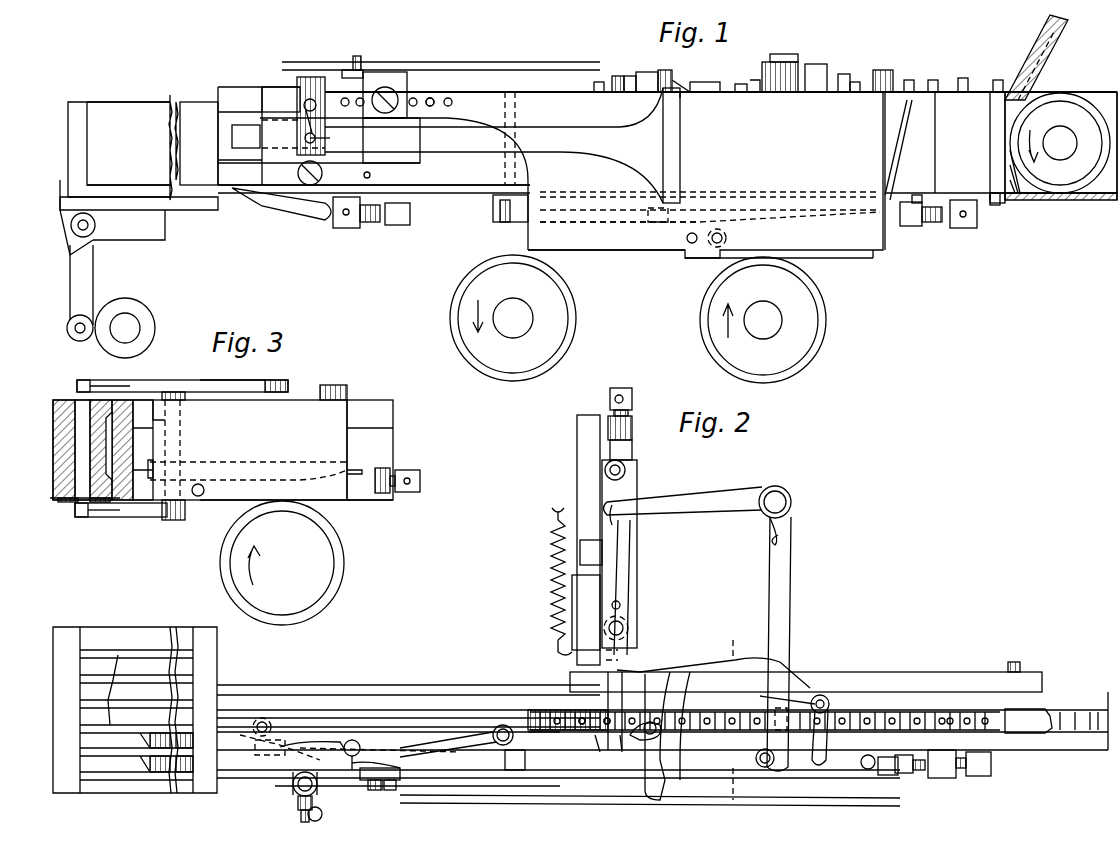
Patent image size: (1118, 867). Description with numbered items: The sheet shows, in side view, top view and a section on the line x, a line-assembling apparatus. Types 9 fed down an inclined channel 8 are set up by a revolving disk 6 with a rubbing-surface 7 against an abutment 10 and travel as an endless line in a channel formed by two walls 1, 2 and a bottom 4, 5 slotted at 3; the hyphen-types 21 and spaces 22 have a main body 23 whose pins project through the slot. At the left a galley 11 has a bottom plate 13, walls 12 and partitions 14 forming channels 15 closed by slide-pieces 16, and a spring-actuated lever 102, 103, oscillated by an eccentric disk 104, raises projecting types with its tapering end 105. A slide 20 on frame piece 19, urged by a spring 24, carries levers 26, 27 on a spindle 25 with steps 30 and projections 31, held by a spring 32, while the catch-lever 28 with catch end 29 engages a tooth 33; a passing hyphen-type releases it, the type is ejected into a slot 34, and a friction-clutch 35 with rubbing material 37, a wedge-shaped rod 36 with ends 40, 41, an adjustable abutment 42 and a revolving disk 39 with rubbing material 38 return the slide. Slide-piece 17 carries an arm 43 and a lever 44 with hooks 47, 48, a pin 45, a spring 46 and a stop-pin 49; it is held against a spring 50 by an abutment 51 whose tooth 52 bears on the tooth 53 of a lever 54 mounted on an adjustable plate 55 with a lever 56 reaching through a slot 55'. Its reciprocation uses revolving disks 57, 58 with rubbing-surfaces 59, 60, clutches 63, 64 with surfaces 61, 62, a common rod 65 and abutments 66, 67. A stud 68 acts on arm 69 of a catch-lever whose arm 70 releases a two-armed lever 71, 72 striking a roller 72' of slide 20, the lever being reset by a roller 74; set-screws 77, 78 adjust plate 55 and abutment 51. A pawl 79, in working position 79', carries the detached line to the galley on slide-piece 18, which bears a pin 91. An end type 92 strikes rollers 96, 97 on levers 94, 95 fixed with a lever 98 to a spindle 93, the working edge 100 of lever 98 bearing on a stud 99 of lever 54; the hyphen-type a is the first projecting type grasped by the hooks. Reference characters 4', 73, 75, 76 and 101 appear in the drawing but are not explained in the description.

In FIG. 1, the channel wall 1 is at (374, 136).
In FIG. 3, the channel wall 1 is at (55, 418).
In FIG. 2, the channel wall 1 is at (573, 749).
In FIG. 1, the channel wall 2 is at (1108, 100).
In FIG. 3, the channel wall 2 is at (85, 432).
In FIG. 2, the channel wall 2 is at (662, 721).
In FIG. 1, the slot 3 is at (1002, 202).
In FIG. 3, the slot 3 is at (105, 450).
In FIG. 2, the slot 3 is at (392, 716).
In FIG. 1, the channel bottom 4 is at (374, 196).
In FIG. 3, the channel bottom 4 is at (77, 491).
In FIG. 2, the base plate 4' is at (408, 734).
In FIG. 3, the channel bottom 5 is at (75, 500).
In FIG. 2, the channel bottom 5 is at (252, 710).
In FIG. 1, the revolving disk 6 is at (1060, 143).
In FIG. 1, the rubbing-surface 7 is at (1092, 184).
In FIG. 2, the rubbing-surface 7 is at (1068, 718).
In FIG. 1, the inclined channel 8 is at (1066, 44).
In FIG. 2, the inclined channel 8 is at (1035, 718).
In FIG. 1, the types 9 is at (1048, 66).
In FIG. 1, the abutment 10 is at (1030, 188).
In FIG. 1, the galley 11 is at (135, 104).
In FIG. 2, the galley 11 is at (174, 704).
In FIG. 1, the galley walls 12 is at (88, 130).
In FIG. 2, the galley walls 12 is at (80, 634).
In FIG. 1, the bottom plate 13 is at (104, 190).
In FIG. 2, the bottom plate 13 is at (118, 636).
In FIG. 1, the partitions 14 is at (129, 147).
In FIG. 2, the partitions 14 is at (105, 690).
In FIG. 2, the galley channels 15 is at (136, 691).
In FIG. 1, the movable slide-pieces 16 is at (196, 143).
In FIG. 2, the movable slide-pieces 16 is at (144, 707).
In FIG. 1, the slide-piece 17 is at (705, 175).
In FIG. 2, the slide-piece 17 is at (702, 768).
In FIG. 3, the slide-piece 18 is at (125, 492).
In FIG. 2, the slide-piece 18 is at (890, 672).
In FIG. 3, the framework piece 19 is at (165, 418).
In FIG. 2, the framework piece 19 is at (585, 466).
In FIG. 3, the spring-actuated slide 20 is at (200, 450).
In FIG. 2, the spring-actuated slide 20 is at (630, 488).
In FIG. 1, the hyphen-types 21 is at (726, 94).
In FIG. 2, the hyphen-types 21 is at (872, 716).
In FIG. 1, the spaces 22 is at (789, 148).
In FIG. 2, the spaces 22 is at (985, 716).
In FIG. 1, the main body 23 is at (990, 150).
In FIG. 2, the spring 24 is at (550, 568).
In FIG. 3, the spindle 25 is at (180, 436).
In FIG. 2, the spindle 25 is at (624, 628).
In FIG. 3, the ejecting lever 26 is at (120, 517).
In FIG. 1, the ejecting lever 27 is at (646, 66).
In FIG. 3, the ejecting lever 27 is at (156, 384).
In FIG. 2, the ejecting lever 27 is at (625, 664).
In FIG. 3, the catch-lever 28 is at (236, 386).
In FIG. 2, the catch-lever 28 is at (620, 560).
In FIG. 3, the catch end 29 is at (284, 384).
In FIG. 2, the catch end 29 is at (625, 522).
In FIG. 1, the step 30 is at (625, 67).
In FIG. 3, the step 30 is at (100, 385).
In FIG. 2, the step 30 is at (601, 730).
In FIG. 1, the projections 31 is at (615, 76).
In FIG. 3, the projections 31 is at (84, 384).
In FIG. 2, the projections 31 is at (574, 730).
In FIG. 2, the spring 32 is at (622, 606).
In FIG. 2, the tooth 33 is at (590, 552).
In FIG. 2, the slot 34 is at (603, 751).
In FIG. 3, the friction-clutch 35 is at (226, 502).
In FIG. 3, the wedge-shaped rod 36 is at (228, 468).
In FIG. 3, the rubbing material 37 is at (345, 500).
In FIG. 3, the rubbing material 38 is at (338, 548).
In FIG. 3, the revolving disk 39 is at (326, 574).
In FIG. 3, the rod end 40 is at (143, 450).
In FIG. 3, the rod end 41 is at (352, 466).
In FIG. 2, the rod end 41 is at (632, 450).
In FIG. 3, the adjustable abutment 42 is at (386, 481).
In FIG. 2, the adjustable abutment 42 is at (632, 428).
In FIG. 1, the projecting arm 43 is at (688, 109).
In FIG. 2, the projecting arm 43 is at (452, 782).
In FIG. 1, the lever 44 is at (440, 145).
In FIG. 2, the lever 44 is at (500, 790).
In FIG. 1, the pin 45 is at (329, 137).
In FIG. 2, the pin 45 is at (298, 812).
In FIG. 1, the spring 46 is at (298, 112).
In FIG. 2, the spring 46 is at (294, 794).
In FIG. 1, the hook-shaped end 47 is at (682, 94).
In FIG. 2, the hook-shaped end 47 is at (668, 745).
In FIG. 1, the hook-shaped end 48 is at (672, 203).
In FIG. 2, the stop-pin 49 is at (324, 811).
In FIG. 1, the spring 50 is at (898, 142).
In FIG. 1, the adjustable abutment 51 is at (405, 84).
In FIG. 2, the adjustable abutment 51 is at (383, 793).
In FIG. 1, the tooth 52 is at (400, 72).
In FIG. 2, the tooth 52 is at (364, 782).
In FIG. 1, the tooth 53 is at (350, 70).
In FIG. 2, the tooth 53 is at (361, 740).
In FIG. 1, the lever 54 is at (300, 80).
In FIG. 2, the lever 54 is at (314, 736).
In FIG. 1, the adjustable plate 55 is at (293, 164).
In FIG. 1, the slot 55' is at (246, 136).
In FIG. 2, the slot 55' is at (260, 759).
In FIG. 1, the lever 56 is at (262, 148).
In FIG. 2, the lever 56 is at (272, 730).
In FIG. 1, the revolving disk 57 is at (562, 330).
In FIG. 1, the revolving disk 58 is at (805, 340).
In FIG. 1, the rubbing-surface 59 is at (570, 298).
In FIG. 1, the rubbing-surface 60 is at (822, 307).
In FIG. 1, the rubbing-surface 61 is at (650, 255).
In FIG. 1, the rubbing-surface 62 is at (830, 258).
In FIG. 1, the wedge-shaped clutch 63 is at (568, 252).
In FIG. 1, the wedge-shaped clutch 64 is at (880, 262).
In FIG. 1, the common rod 65 is at (583, 222).
In FIG. 2, the common rod 65 is at (888, 746).
In FIG. 1, the adjustable abutment 66 is at (405, 222).
In FIG. 1, the adjustable abutment 67 is at (906, 226).
In FIG. 2, the adjustable abutment 67 is at (900, 774).
In FIG. 1, the stud 68 is at (880, 78).
In FIG. 2, the stud 68 is at (860, 772).
In FIG. 1, the lever arm 69 is at (840, 72).
In FIG. 2, the lever arm 69 is at (828, 757).
In FIG. 1, the catch-arm 70 is at (810, 64).
In FIG. 2, the catch-arm 70 is at (805, 698).
In FIG. 1, the lever arm 71 is at (800, 62).
In FIG. 2, the lever arm 71 is at (770, 612).
In FIG. 1, the lever arm 72 is at (706, 76).
In FIG. 2, the lever arm 72 is at (698, 515).
In FIG. 3, the roller 72' is at (348, 387).
In FIG. 2, the roller 72' is at (635, 470).
In FIG. 1, the block 73 is at (784, 92).
In FIG. 2, the block 73 is at (782, 712).
In FIG. 1, the roller 74 is at (749, 73).
In FIG. 2, the roller 74 is at (756, 757).
In FIG. 1, the pin 75 is at (370, 175).
In FIG. 1, the hole 76 is at (432, 98).
In FIG. 1, the set-screw 77 is at (322, 173).
In FIG. 1, the set-screw 78 is at (384, 120).
In FIG. 2, the set-screw 78 is at (400, 782).
In FIG. 2, the pawl 79 is at (568, 710).
In FIG. 2, the pawl working position 79' is at (544, 735).
In FIG. 2, the pin 91 is at (1008, 664).
In FIG. 1, the end type 92 is at (963, 78).
In FIG. 2, the end type 92 is at (951, 716).
In FIG. 1, the spindle 93 is at (502, 166).
In FIG. 2, the spindle 93 is at (503, 724).
In FIG. 1, the lever 94 is at (662, 67).
In FIG. 2, the lever 94 is at (628, 751).
In FIG. 1, the lever 95 is at (508, 222).
In FIG. 1, the roller 96 is at (680, 78).
In FIG. 2, the roller 96 is at (642, 732).
In FIG. 1, the roller 97 is at (668, 218).
In FIG. 1, the lever 98 is at (455, 62).
In FIG. 2, the lever 98 is at (462, 752).
In FIG. 1, the stud 99 is at (360, 58).
In FIG. 2, the stud 99 is at (376, 747).
In FIG. 2, the working edge 100 is at (272, 748).
In FIG. 1, the roller 101 is at (77, 220).
In FIG. 1, the lever arm 102 is at (93, 280).
In FIG. 1, the lever arm 103 is at (185, 225).
In FIG. 1, the eccentric disk 104 is at (150, 320).
In FIG. 1, the tapering end 105 is at (281, 204).
In FIG. 2, the hyphen-type a is at (680, 678).
In FIG. 2, the section line x is at (732, 721).